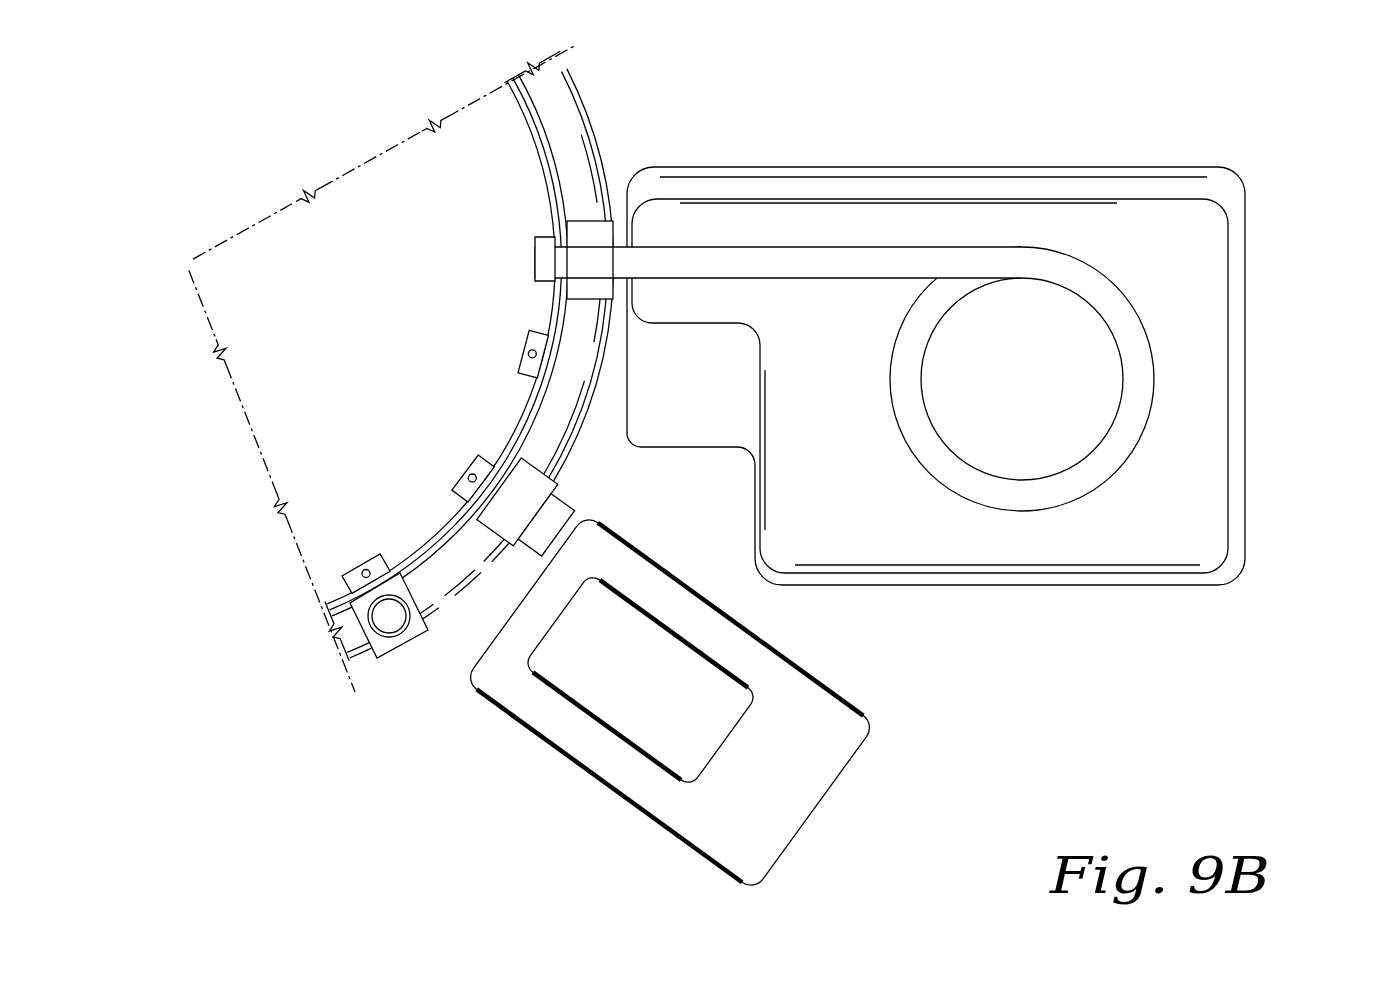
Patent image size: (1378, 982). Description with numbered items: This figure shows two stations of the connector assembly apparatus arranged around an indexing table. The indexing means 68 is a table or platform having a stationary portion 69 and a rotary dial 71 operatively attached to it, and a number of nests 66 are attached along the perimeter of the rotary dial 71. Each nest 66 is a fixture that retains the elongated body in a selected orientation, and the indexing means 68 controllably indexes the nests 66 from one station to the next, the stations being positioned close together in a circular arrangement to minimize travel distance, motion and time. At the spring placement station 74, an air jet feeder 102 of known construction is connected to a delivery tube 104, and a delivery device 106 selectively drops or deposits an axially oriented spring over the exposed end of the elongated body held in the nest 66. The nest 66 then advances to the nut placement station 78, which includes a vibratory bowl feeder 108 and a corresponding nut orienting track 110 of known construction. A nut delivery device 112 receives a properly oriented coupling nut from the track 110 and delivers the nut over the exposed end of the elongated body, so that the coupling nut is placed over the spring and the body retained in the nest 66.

The nest 66 is at (545, 284).
The indexing means 68 is at (600, 101).
The stationary portion 69 is at (556, 80).
The rotary dial 71 is at (490, 112).
The spring placement station 74 is at (848, 822).
The nut placement station 78 is at (1015, 147).
The air jet feeder 102 is at (600, 730).
The delivery tube 104 is at (562, 510).
The delivery device 106 is at (545, 478).
The vibratory bowl feeder 108 is at (1143, 435).
The nut orienting track 110 is at (740, 246).
The nut delivery device 112 is at (598, 205).